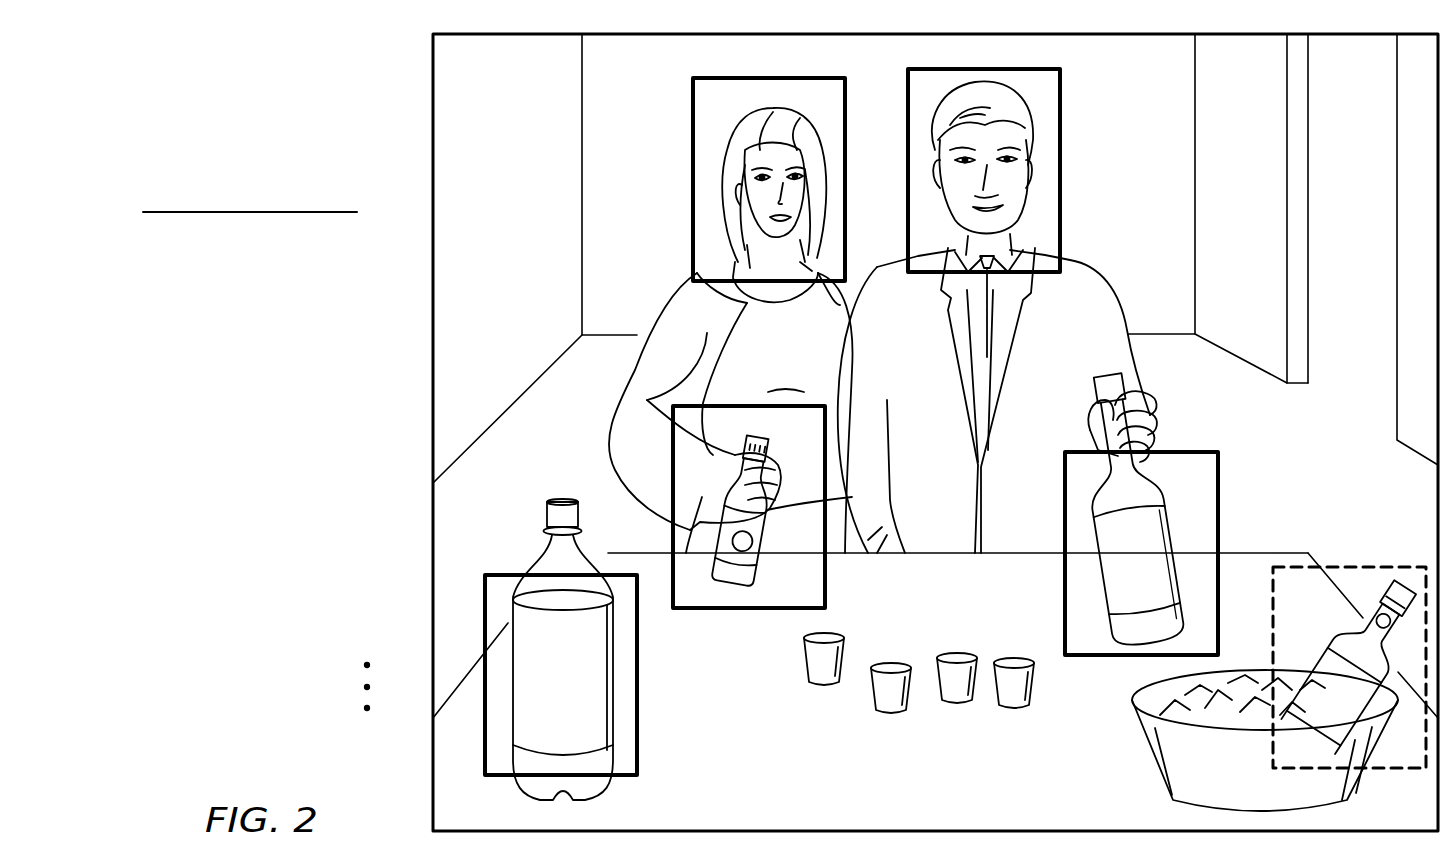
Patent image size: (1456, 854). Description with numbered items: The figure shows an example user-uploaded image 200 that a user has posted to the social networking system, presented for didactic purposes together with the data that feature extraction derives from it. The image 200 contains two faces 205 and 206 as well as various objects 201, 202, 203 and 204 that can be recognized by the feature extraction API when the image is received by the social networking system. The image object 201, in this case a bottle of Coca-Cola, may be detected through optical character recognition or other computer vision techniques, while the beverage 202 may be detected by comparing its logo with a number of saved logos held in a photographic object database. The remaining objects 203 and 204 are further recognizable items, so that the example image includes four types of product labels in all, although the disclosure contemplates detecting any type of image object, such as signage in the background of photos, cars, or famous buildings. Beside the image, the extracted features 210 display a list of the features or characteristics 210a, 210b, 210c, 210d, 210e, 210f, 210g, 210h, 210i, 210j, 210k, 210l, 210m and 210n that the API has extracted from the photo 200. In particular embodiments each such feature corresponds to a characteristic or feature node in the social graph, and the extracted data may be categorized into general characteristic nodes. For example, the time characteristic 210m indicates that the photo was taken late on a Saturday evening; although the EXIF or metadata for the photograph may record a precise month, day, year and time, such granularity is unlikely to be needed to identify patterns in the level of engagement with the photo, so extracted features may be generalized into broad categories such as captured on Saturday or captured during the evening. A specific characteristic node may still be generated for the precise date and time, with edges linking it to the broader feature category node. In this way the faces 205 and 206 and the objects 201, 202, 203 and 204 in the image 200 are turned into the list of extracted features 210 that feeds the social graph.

The user-uploaded image 200 is at (430, 129).
The image object 201 is at (637, 700).
The beverage 202 is at (673, 507).
The object 203 is at (1218, 510).
The object 204 is at (1357, 567).
The face 205 is at (693, 178).
The face 206 is at (1060, 172).
The extracted features 210 is at (249, 165).
The extracted feature 210a is at (299, 237).
The extracted feature 210b is at (260, 265).
The extracted feature 210c is at (277, 293).
The extracted feature 210d is at (303, 321).
The extracted feature 210e is at (292, 349).
The extracted feature 210f is at (250, 377).
The extracted feature 210g is at (260, 405).
The extracted feature 210h is at (280, 433).
The extracted feature 210i is at (277, 461).
The extracted feature 210j is at (273, 489).
The extracted feature 210k is at (262, 517).
The extracted feature 210l is at (304, 545).
The time characteristic 210m is at (291, 587).
The extracted feature 210n is at (275, 629).